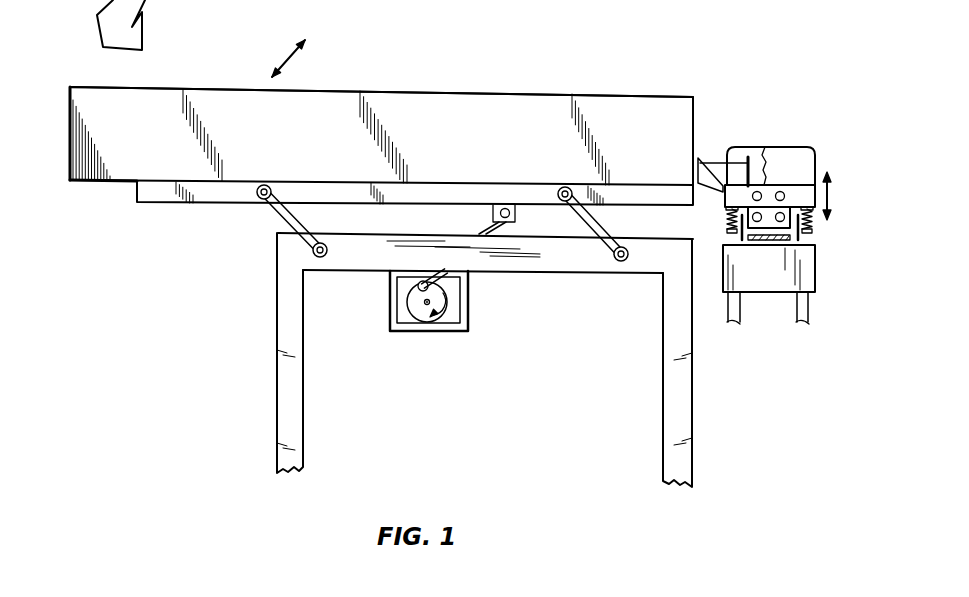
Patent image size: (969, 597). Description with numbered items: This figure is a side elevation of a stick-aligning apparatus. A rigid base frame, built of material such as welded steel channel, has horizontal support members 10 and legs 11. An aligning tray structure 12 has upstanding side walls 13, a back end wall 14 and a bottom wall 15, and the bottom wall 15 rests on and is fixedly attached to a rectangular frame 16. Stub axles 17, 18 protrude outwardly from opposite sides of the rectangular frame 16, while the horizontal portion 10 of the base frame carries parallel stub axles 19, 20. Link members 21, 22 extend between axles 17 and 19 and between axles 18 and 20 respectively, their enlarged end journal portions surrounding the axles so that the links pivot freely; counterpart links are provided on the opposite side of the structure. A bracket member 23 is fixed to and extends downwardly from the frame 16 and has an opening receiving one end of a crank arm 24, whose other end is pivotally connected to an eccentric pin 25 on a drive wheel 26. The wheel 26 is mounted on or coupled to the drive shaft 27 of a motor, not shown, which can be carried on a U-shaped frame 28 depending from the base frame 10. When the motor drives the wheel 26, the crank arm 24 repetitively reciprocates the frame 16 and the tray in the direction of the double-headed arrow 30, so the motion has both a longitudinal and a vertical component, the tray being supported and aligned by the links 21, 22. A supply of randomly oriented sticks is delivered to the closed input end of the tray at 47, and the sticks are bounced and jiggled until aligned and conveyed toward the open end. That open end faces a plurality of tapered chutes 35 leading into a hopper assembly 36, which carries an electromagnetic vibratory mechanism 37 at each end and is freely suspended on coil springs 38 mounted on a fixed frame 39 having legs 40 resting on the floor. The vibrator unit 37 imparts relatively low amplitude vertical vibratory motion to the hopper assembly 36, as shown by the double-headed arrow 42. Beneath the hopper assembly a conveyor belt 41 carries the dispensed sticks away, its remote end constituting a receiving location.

The horizontal support members 10 is at (594, 274).
The legs 11 is at (303, 432).
The aligning tray structure 12 is at (553, 82).
The upstanding side walls 13 is at (663, 95).
The back end wall 14 is at (70, 135).
The bottom wall 15 is at (110, 184).
The rectangular frame 16 is at (193, 204).
The stub axle 17 is at (264, 185).
The stub axle 18 is at (565, 188).
The stub axle 19 is at (327, 257).
The stub axle 20 is at (627, 259).
The link member 21 is at (285, 216).
The link member 22 is at (602, 224).
The bracket member 23 is at (493, 209).
The crank arm 24 is at (492, 229).
The eccentric pin 25 is at (418, 289).
The drive wheel 26 is at (430, 302).
The drive shaft 27 is at (410, 300).
The U-shaped frame 28 is at (468, 316).
The double-headed arrow 30 is at (280, 58).
The tapered chutes 35 is at (712, 147).
The hopper assembly 36 is at (816, 156).
The electromagnetic vibratory mechanism 37 is at (780, 172).
The coil springs 38 is at (727, 218).
The fixed frame 39 is at (816, 270).
The legs 40 is at (768, 320).
The conveyor belt 41 is at (768, 241).
The double-headed arrow 42 is at (830, 196).
The input end of the tray 47 is at (153, 0).